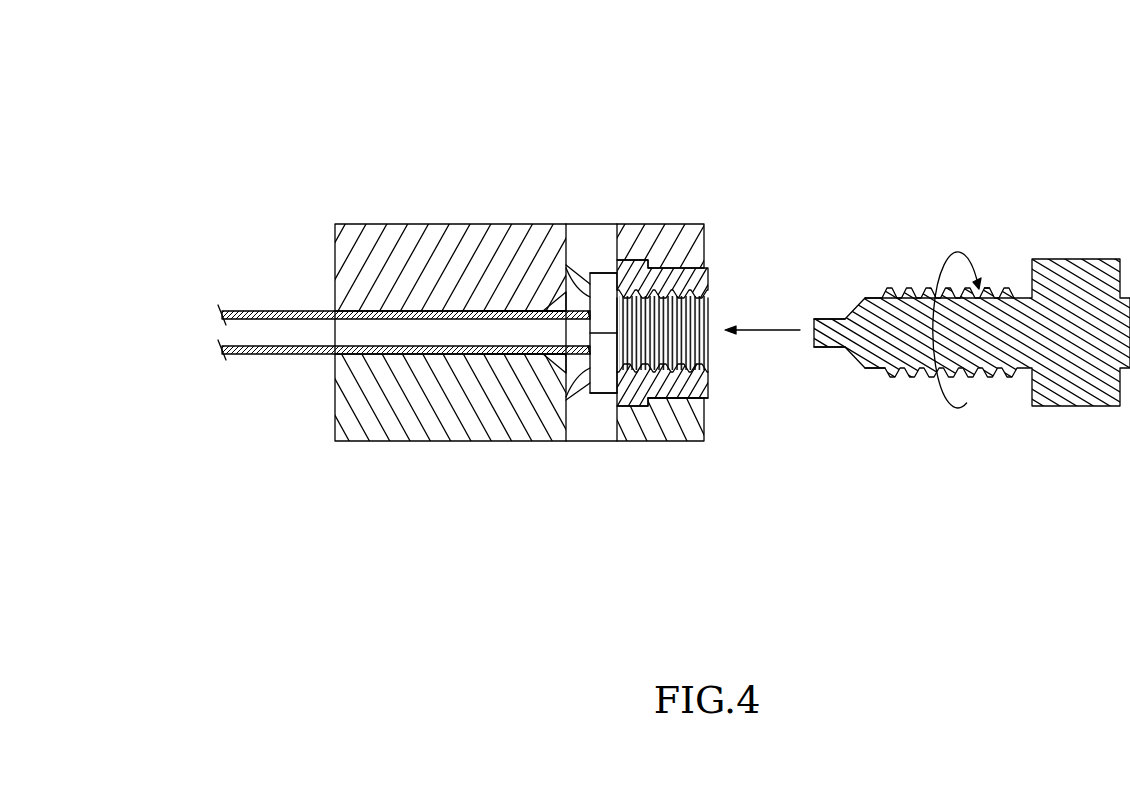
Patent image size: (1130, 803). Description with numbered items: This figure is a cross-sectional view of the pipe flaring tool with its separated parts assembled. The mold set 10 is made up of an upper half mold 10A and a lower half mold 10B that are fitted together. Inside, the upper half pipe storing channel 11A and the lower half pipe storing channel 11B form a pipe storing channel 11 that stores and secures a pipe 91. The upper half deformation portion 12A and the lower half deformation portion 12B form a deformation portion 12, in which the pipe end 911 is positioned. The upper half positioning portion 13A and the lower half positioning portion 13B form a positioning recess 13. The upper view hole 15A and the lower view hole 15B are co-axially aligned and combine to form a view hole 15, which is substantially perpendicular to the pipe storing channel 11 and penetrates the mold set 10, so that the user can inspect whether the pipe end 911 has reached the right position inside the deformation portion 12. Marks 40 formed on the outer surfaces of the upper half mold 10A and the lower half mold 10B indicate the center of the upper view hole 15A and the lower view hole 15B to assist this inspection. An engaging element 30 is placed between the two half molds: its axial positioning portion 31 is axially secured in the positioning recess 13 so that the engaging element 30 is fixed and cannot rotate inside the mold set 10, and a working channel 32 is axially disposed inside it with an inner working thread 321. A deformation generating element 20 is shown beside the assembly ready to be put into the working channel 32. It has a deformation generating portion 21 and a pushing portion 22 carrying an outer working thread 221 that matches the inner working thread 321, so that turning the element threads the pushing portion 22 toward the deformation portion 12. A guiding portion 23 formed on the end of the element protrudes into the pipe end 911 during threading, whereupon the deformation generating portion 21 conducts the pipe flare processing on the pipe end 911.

The mold set 10 is at (407, 401).
The upper half mold 10A is at (335, 282).
The lower half mold 10B is at (451, 437).
The pipe storing channel 11 is at (406, 208).
The upper half pipe storing channel 11A is at (385, 352).
The lower half pipe storing channel 11B is at (440, 318).
The deformation portion 12 is at (488, 208).
The upper half deformation portion 12A is at (552, 352).
The lower half deformation portion 12B is at (540, 313).
The positioning recess 13 is at (665, 251).
The upper half positioning portion 13A is at (617, 270).
The lower half positioning portion 13B is at (658, 285).
The view hole 15 is at (515, 426).
The upper view hole 15A is at (608, 243).
The lower view hole 15B is at (565, 405).
The deformation generating element 20 is at (955, 333).
The deformation generating portion 21 is at (862, 303).
The pushing portion 22 is at (909, 282).
The outer working thread 221 is at (1019, 220).
The guiding portion 23 is at (815, 318).
The engaging element 30 is at (681, 424).
The axial positioning portion 31 is at (647, 330).
The working channel 32 is at (710, 382).
The inner working thread 321 is at (673, 400).
The marks 40 is at (592, 223).
The pipe 91 is at (384, 381).
The pipe end 911 is at (594, 352).